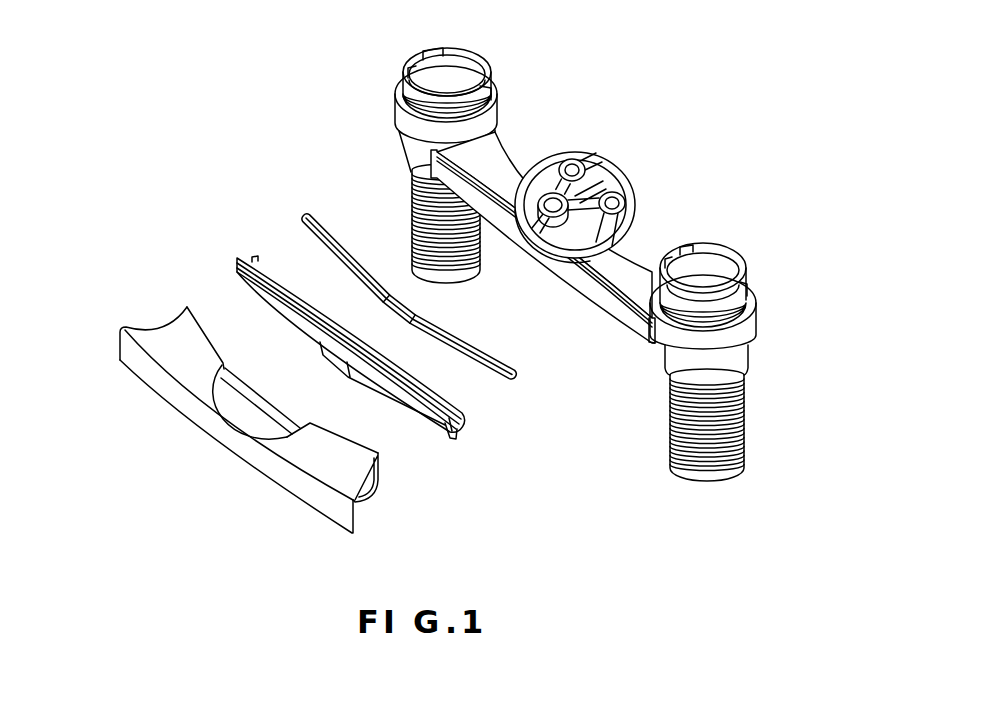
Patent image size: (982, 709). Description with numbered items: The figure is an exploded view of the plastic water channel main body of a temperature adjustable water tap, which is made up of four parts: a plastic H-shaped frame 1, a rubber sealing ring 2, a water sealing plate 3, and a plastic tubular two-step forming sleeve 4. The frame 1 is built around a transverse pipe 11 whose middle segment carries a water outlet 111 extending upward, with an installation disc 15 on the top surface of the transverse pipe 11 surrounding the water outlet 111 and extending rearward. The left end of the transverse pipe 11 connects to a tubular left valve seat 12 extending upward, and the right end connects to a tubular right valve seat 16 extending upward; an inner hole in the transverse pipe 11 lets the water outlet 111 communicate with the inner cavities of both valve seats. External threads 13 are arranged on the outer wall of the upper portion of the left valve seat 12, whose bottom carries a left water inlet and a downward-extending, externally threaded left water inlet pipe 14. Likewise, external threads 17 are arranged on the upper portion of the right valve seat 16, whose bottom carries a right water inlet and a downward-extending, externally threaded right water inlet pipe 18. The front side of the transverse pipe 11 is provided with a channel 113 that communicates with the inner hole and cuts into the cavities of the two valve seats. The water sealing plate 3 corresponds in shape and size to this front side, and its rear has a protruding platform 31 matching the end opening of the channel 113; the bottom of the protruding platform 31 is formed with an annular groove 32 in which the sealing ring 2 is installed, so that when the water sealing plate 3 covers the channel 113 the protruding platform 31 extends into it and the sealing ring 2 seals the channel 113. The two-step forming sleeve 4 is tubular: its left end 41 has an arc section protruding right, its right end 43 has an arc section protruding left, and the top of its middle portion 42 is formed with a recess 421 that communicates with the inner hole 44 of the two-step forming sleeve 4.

The H-shaped frame 1 is at (570, 257).
The transverse pipe 11 is at (543, 227).
The water outlet 111 is at (532, 243).
The channel 113 is at (578, 290).
The left valve seat 12 is at (411, 151).
The external threads 13 is at (487, 70).
The left water inlet pipe 14 is at (413, 225).
The installation disc 15 is at (618, 176).
The right valve seat 16 is at (728, 356).
The external threads 17 is at (720, 248).
The right water inlet pipe 18 is at (667, 457).
The rubber sealing ring 2 is at (302, 212).
The water sealing plate 3 is at (362, 352).
The protruding platform 31 is at (465, 412).
The annular groove 32 is at (452, 439).
The two-step forming sleeve 4 is at (248, 410).
The left end 41 is at (145, 338).
The middle portion 42 is at (250, 440).
The recess 421 is at (225, 408).
The right end 43 is at (328, 482).
The inner hole 44 is at (370, 484).